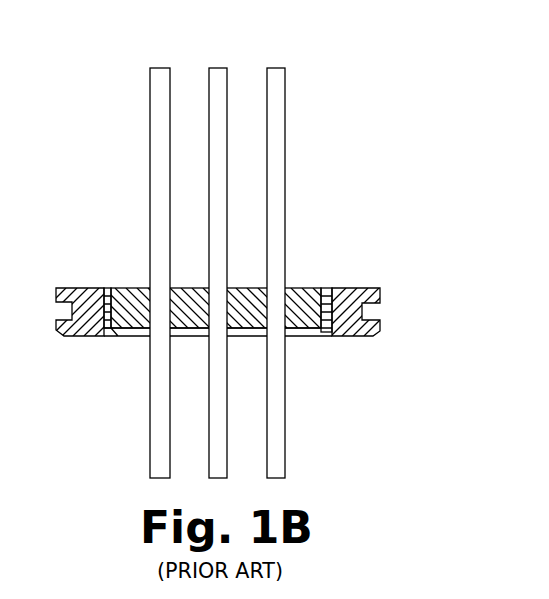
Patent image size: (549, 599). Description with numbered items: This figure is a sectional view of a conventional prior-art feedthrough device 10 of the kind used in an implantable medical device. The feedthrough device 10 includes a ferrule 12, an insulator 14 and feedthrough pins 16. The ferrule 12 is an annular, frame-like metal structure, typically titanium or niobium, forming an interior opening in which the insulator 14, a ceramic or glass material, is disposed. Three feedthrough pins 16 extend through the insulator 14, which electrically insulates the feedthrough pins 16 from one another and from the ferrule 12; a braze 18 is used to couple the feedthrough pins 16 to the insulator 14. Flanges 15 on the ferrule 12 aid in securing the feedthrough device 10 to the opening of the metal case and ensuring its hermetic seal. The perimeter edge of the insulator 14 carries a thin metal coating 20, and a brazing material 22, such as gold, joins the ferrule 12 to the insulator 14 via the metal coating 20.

The feedthrough device 10 is at (388, 114).
The ferrule 12 is at (351, 337).
The insulator 14 is at (327, 288).
The flanges 15 is at (368, 301).
The feedthrough pins 16 is at (159, 72).
The braze 18 is at (143, 288).
The metal coating 20 is at (107, 288).
The brazing material 22 is at (103, 288).